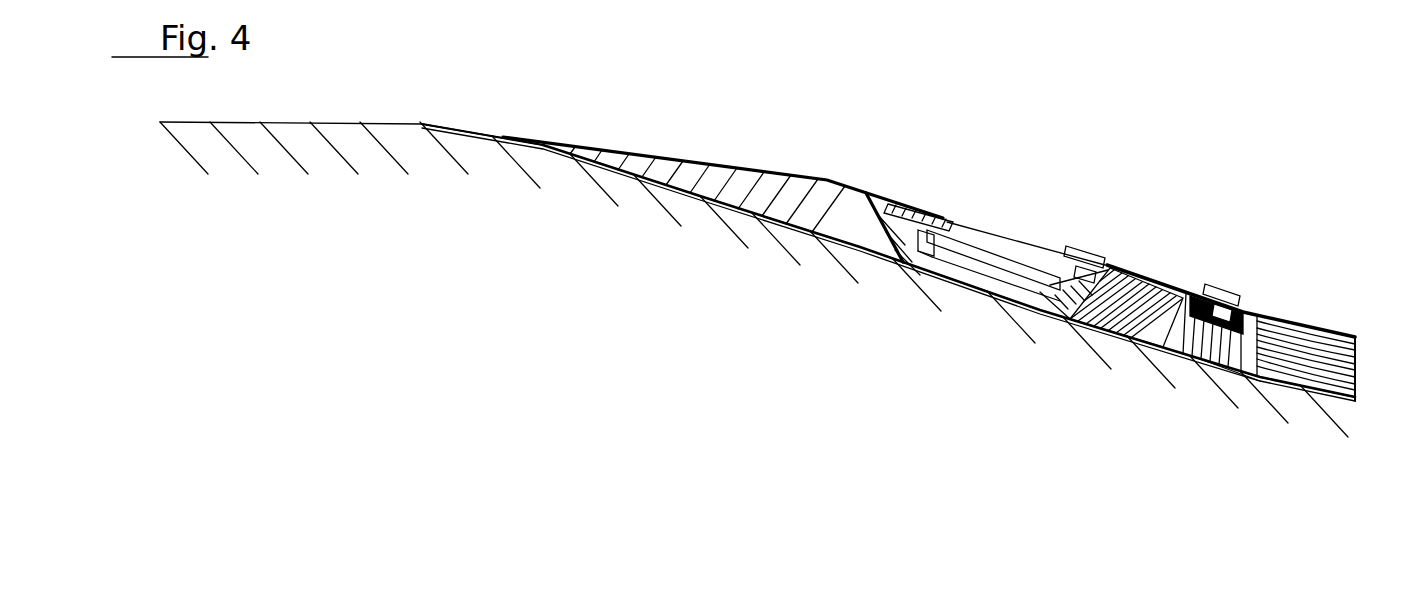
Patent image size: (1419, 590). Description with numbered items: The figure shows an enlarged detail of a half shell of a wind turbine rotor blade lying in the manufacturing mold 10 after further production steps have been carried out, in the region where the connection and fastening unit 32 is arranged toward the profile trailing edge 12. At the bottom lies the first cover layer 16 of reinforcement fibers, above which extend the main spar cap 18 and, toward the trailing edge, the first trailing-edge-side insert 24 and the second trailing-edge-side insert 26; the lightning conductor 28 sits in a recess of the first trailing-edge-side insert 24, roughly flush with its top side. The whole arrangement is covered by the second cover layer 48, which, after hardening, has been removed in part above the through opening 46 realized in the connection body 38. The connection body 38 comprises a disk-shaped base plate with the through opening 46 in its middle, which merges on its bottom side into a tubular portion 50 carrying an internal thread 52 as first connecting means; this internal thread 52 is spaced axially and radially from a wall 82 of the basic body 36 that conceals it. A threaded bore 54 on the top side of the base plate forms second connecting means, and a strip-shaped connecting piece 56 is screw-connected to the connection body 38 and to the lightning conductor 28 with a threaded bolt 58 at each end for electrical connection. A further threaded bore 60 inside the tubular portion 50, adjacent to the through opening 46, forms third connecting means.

The manufacturing mold 10 is at (333, 170).
The profile trailing edge 12 is at (422, 122).
The first cover layer 16 is at (470, 138).
The main spar cap 18 is at (1318, 353).
The first trailing-edge-side insert 24 is at (1227, 367).
The second trailing-edge-side insert 26 is at (745, 178).
The lightning conductor 28 is at (1250, 303).
The connection and fastening unit 32 is at (1028, 190).
The basic body 36 is at (897, 268).
The connection body 38 is at (900, 203).
The through opening 46 is at (993, 230).
The second cover layer 48 is at (638, 143).
The tubular portion 50 is at (1058, 310).
The internal thread 52 is at (928, 282).
The threaded bore 54 is at (1108, 263).
The strip-shaped connecting piece 56 is at (1167, 287).
The threaded bolt 58 is at (1090, 243).
The further threaded bore 60 is at (948, 272).
The wall 82 is at (1003, 290).